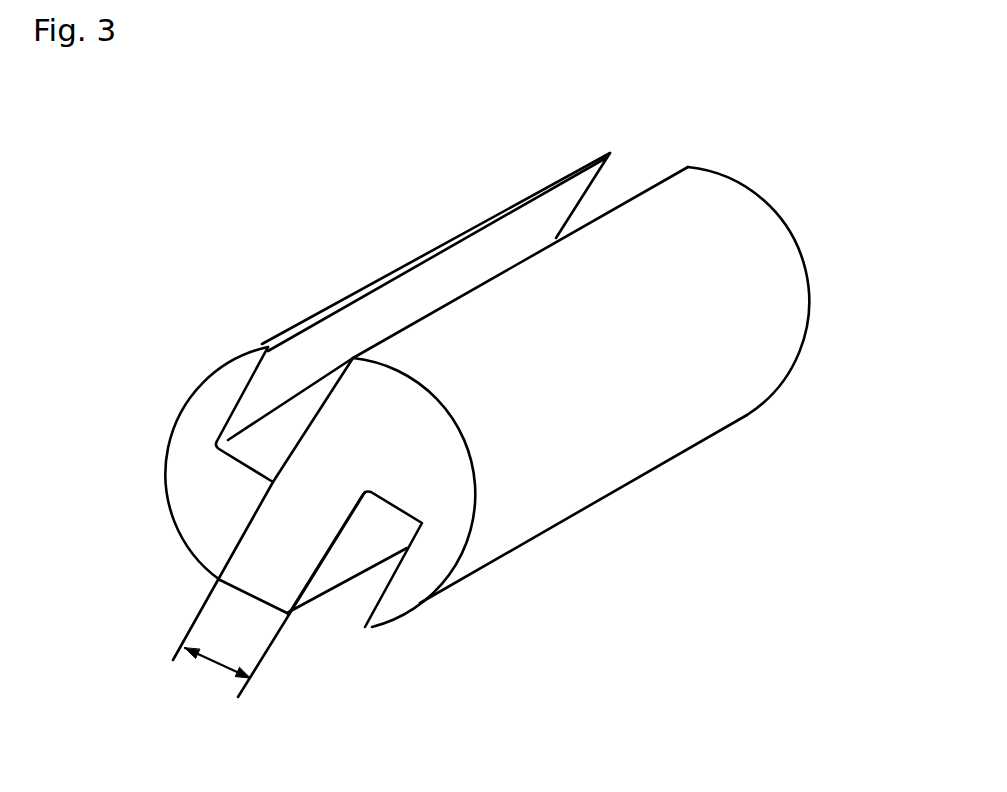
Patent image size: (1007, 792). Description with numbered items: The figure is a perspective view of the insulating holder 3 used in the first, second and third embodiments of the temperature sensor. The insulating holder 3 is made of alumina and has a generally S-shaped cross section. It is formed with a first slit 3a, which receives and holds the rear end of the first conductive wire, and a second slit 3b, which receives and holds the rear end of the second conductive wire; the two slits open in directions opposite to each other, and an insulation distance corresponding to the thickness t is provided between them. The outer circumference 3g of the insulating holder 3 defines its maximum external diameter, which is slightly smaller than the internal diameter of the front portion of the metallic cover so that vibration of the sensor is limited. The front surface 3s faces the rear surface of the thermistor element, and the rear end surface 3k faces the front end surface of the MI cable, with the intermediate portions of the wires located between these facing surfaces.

The insulating holder 3 is at (533, 282).
The rear end surface 3k is at (757, 197).
The circumference 3g is at (633, 450).
The front surface 3s is at (193, 512).
The first slit 3a is at (376, 320).
The second slit 3b is at (370, 606).
The thickness t is at (217, 655).